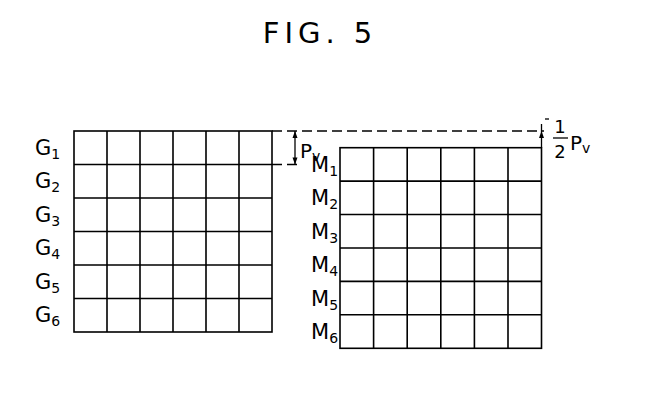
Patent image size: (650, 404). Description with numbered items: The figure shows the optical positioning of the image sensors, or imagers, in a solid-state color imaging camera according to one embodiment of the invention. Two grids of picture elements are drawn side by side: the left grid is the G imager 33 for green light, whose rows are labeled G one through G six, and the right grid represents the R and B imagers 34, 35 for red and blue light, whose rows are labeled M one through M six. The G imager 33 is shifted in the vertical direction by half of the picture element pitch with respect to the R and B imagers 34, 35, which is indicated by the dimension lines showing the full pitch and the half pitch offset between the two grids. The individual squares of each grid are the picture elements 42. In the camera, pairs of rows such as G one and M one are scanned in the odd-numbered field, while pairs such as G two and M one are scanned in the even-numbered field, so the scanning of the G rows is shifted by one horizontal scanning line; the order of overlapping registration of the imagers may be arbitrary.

The picture element 42 is at (332, 242).
The G imager 33 is at (152, 333).
The R imager 34 is at (441, 271).
The B imager 35 is at (427, 349).